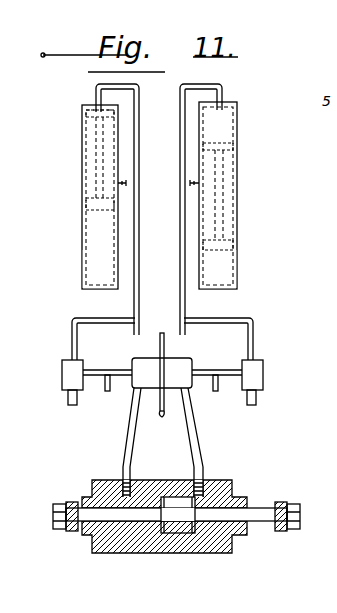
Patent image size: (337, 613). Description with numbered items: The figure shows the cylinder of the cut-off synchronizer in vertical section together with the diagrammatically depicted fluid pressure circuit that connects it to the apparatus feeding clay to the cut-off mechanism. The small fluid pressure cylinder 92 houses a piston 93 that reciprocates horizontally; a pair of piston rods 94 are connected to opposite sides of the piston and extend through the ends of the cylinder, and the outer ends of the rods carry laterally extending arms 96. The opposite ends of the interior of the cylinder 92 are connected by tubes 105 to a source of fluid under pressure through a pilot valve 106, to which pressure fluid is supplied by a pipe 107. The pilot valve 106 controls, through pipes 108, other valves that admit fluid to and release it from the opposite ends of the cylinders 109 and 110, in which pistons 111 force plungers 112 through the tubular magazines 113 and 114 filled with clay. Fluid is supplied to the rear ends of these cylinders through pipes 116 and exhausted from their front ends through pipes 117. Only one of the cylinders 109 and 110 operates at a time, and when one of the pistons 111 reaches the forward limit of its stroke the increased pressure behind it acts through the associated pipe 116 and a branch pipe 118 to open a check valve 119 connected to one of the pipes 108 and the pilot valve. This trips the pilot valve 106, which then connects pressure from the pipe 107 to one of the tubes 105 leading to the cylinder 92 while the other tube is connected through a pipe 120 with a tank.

The fluid pressure cylinder 92 is at (128, 553).
The piston 93 is at (176, 498).
The piston rods 94 is at (90, 510).
The laterally extending arms 96 is at (66, 531).
The tubes 105 is at (190, 445).
The pilot valve 106 is at (190, 360).
The pipe 107 is at (158, 345).
The pipes 108 is at (107, 391).
The cylinder 109 is at (82, 152).
The cylinder 110 is at (237, 113).
The pistons 111 is at (86, 112).
The plungers 112 is at (86, 207).
The tubular magazine 113 is at (83, 250).
The tubular magazine 114 is at (237, 268).
The pipes 116 is at (180, 172).
The pipes 117 is at (190, 184).
The branch pipe 118 is at (88, 318).
The check valve 119 is at (64, 364).
The pipe 120 is at (158, 414).